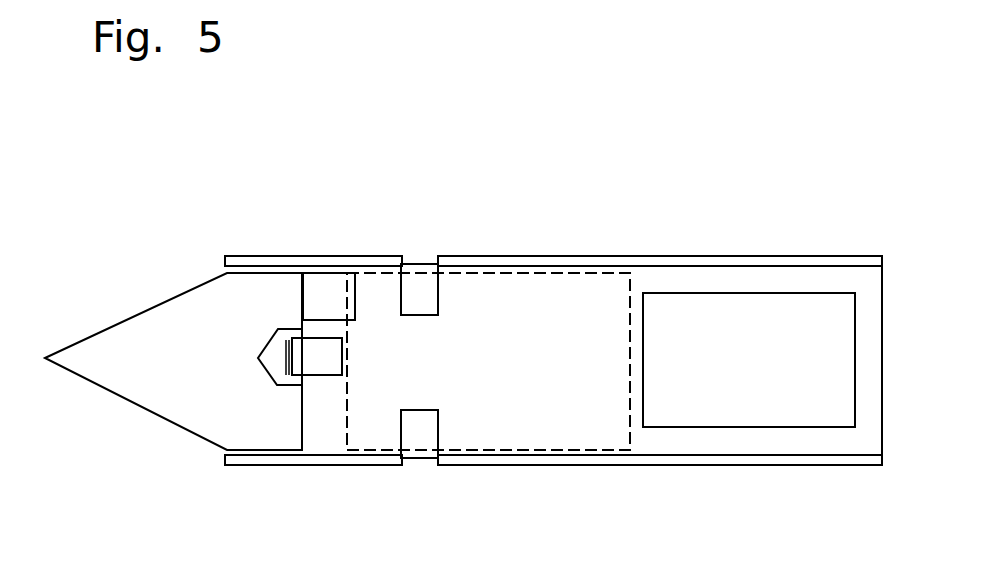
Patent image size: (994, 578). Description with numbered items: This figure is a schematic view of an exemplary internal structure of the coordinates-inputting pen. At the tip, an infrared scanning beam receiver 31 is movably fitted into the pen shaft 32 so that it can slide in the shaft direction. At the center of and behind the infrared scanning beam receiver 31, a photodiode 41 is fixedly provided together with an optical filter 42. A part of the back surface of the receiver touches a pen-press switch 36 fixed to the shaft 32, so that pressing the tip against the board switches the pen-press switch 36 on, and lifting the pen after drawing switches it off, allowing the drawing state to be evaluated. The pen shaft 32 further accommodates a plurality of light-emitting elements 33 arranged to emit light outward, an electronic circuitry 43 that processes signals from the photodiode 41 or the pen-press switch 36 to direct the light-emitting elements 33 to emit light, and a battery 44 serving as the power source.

The infrared scanning beam receiver 31 is at (117, 332).
The pen shaft 32 is at (722, 257).
The light-emitting elements 33 is at (413, 286).
The pen-press switch 36 is at (332, 288).
The photodiode 41 is at (320, 362).
The optical filter 42 is at (287, 363).
The electronic circuitry 43 is at (513, 418).
The battery 44 is at (748, 408).